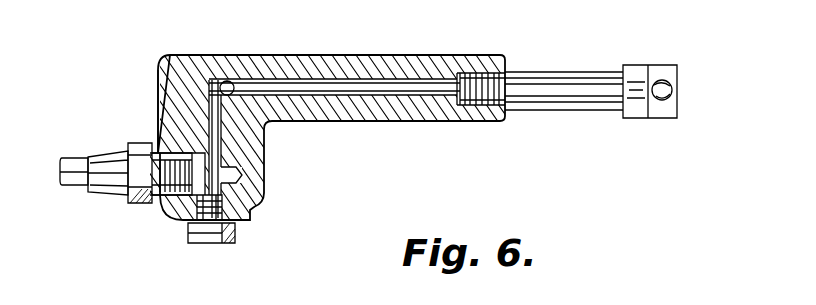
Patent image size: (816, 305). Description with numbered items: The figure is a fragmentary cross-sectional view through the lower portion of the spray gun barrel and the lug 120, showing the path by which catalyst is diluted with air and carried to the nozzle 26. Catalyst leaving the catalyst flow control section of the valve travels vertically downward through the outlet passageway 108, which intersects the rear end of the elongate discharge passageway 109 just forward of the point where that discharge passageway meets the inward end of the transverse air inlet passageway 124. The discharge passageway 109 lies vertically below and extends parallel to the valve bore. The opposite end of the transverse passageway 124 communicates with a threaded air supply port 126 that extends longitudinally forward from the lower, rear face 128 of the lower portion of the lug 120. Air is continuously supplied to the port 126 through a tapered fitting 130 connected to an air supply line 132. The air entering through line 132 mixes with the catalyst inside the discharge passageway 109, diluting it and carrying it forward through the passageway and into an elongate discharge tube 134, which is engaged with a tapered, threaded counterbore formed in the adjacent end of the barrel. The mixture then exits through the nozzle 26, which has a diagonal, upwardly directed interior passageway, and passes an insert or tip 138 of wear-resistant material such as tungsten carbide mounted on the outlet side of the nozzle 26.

The nozzle 26 is at (640, 119).
The outlet passageway 108 is at (229, 80).
The discharge passageway 109 is at (405, 94).
The lug 120 is at (253, 165).
The transverse air inlet passageway 124 is at (210, 108).
The threaded air supply port 126 is at (184, 176).
The lower rear face 128 is at (158, 124).
The tapered fitting 130 is at (110, 190).
The air supply line 132 is at (76, 162).
The discharge tube 134 is at (560, 101).
The tip 138 is at (664, 80).